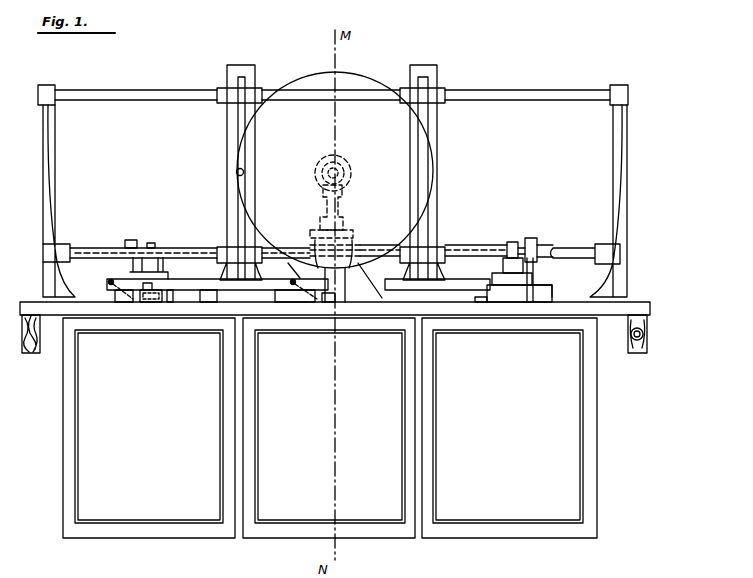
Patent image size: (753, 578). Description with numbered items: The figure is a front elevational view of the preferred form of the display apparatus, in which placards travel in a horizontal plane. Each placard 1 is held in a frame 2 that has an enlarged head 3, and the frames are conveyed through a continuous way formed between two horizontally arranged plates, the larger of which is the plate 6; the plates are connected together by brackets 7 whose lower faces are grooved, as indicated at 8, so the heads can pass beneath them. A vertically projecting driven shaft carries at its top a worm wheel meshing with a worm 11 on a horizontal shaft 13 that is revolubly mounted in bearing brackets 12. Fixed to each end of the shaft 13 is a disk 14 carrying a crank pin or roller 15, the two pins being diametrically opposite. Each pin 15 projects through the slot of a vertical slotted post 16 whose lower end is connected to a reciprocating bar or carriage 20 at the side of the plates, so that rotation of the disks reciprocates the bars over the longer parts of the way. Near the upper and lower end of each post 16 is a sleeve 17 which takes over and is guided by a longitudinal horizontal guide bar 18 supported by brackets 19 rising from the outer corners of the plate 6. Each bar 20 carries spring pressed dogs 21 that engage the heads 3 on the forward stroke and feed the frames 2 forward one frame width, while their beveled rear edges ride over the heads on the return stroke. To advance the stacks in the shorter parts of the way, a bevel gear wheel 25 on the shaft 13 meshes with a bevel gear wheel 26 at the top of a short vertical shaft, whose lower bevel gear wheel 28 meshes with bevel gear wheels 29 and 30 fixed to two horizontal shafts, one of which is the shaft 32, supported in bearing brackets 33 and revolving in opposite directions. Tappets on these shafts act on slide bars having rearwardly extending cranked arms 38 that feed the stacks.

The placard 1 is at (87, 406).
The frame 2 is at (147, 527).
The enlarged head 3 is at (155, 301).
The plate 6 is at (634, 302).
The bracket 7 is at (535, 300).
The groove 8 is at (518, 300).
The worm 11 is at (333, 170).
The bearing bracket 12 is at (382, 288).
The horizontal shaft 13 is at (336, 172).
The disk 14 is at (424, 192).
The crank pin 15 is at (244, 170).
The slotted post 16 is at (237, 122).
The sleeve 17 is at (255, 100).
The guide bar 18 is at (128, 94).
The bracket 19 is at (52, 160).
The reciprocating bar 20 is at (215, 303).
The dog 21 is at (135, 300).
The bevel gear wheel 25 is at (334, 170).
The bevel gear wheel 26 is at (325, 222).
The bevel gear wheel 28 is at (345, 230).
The bevel gear wheel 29 is at (313, 240).
The bevel gear wheel 30 is at (352, 240).
The shaft 32 is at (485, 248).
The bearing bracket 33 is at (530, 242).
The cranked arm 38 is at (508, 300).